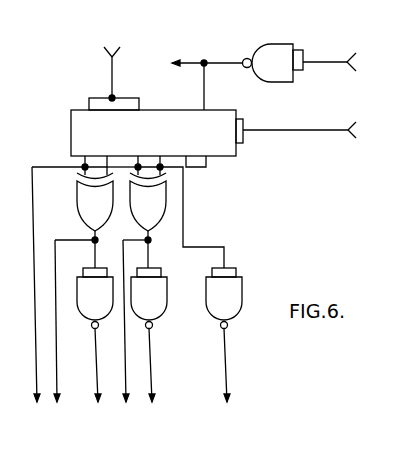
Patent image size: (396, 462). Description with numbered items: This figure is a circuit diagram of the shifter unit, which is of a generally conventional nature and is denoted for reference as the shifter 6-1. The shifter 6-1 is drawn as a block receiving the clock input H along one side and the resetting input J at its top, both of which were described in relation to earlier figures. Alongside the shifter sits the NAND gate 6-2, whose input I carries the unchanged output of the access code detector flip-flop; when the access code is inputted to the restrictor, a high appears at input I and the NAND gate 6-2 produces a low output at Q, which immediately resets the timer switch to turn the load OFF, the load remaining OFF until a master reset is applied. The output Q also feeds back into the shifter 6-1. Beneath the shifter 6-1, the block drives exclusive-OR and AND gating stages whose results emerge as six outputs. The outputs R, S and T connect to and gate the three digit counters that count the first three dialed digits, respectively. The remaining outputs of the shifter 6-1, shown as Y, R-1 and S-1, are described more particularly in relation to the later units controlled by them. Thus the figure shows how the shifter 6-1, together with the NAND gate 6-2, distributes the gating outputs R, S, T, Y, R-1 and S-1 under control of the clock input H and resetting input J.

The shifter 6-1 is at (222, 117).
The NAND gate 6-2 is at (284, 70).
The resetting input J is at (112, 64).
The output Q is at (205, 76).
The input I is at (333, 54).
The clock input H is at (307, 130).
The output Y is at (37, 296).
The output R-1 is at (72, 332).
The output R is at (95, 346).
The output S-1 is at (131, 332).
The output S is at (149, 346).
The output T is at (201, 296).